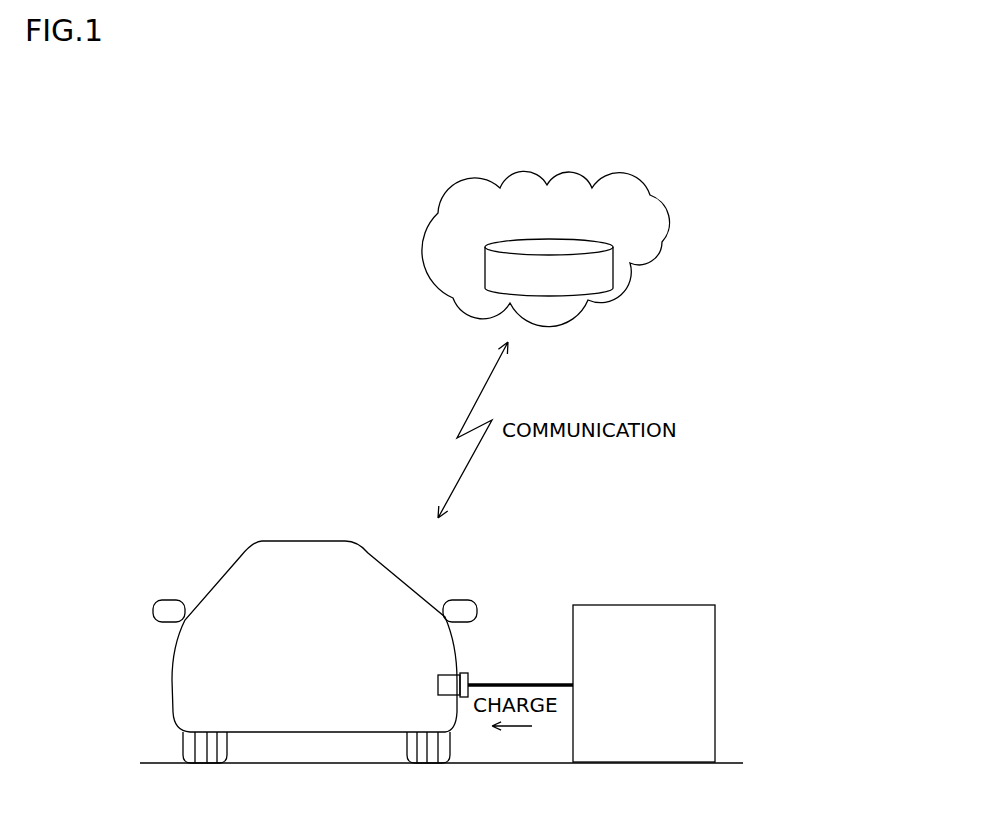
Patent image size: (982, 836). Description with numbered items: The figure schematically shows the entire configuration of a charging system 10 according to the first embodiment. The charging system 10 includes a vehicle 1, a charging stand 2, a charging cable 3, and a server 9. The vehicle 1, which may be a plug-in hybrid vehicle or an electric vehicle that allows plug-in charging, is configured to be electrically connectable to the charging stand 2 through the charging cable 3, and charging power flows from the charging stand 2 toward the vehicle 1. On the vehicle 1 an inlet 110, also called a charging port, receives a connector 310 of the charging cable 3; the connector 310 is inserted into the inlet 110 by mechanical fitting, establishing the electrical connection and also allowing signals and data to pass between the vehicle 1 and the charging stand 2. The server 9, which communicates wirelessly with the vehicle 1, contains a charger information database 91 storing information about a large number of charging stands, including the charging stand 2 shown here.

The charging system 10 is at (200, 135).
The server 9 is at (628, 176).
The charger information database 91 is at (581, 298).
The vehicle 1 is at (348, 540).
The inlet 110 is at (445, 672).
The connector 310 is at (462, 673).
The charging cable 3 is at (538, 681).
The charging stand 2 is at (672, 605).